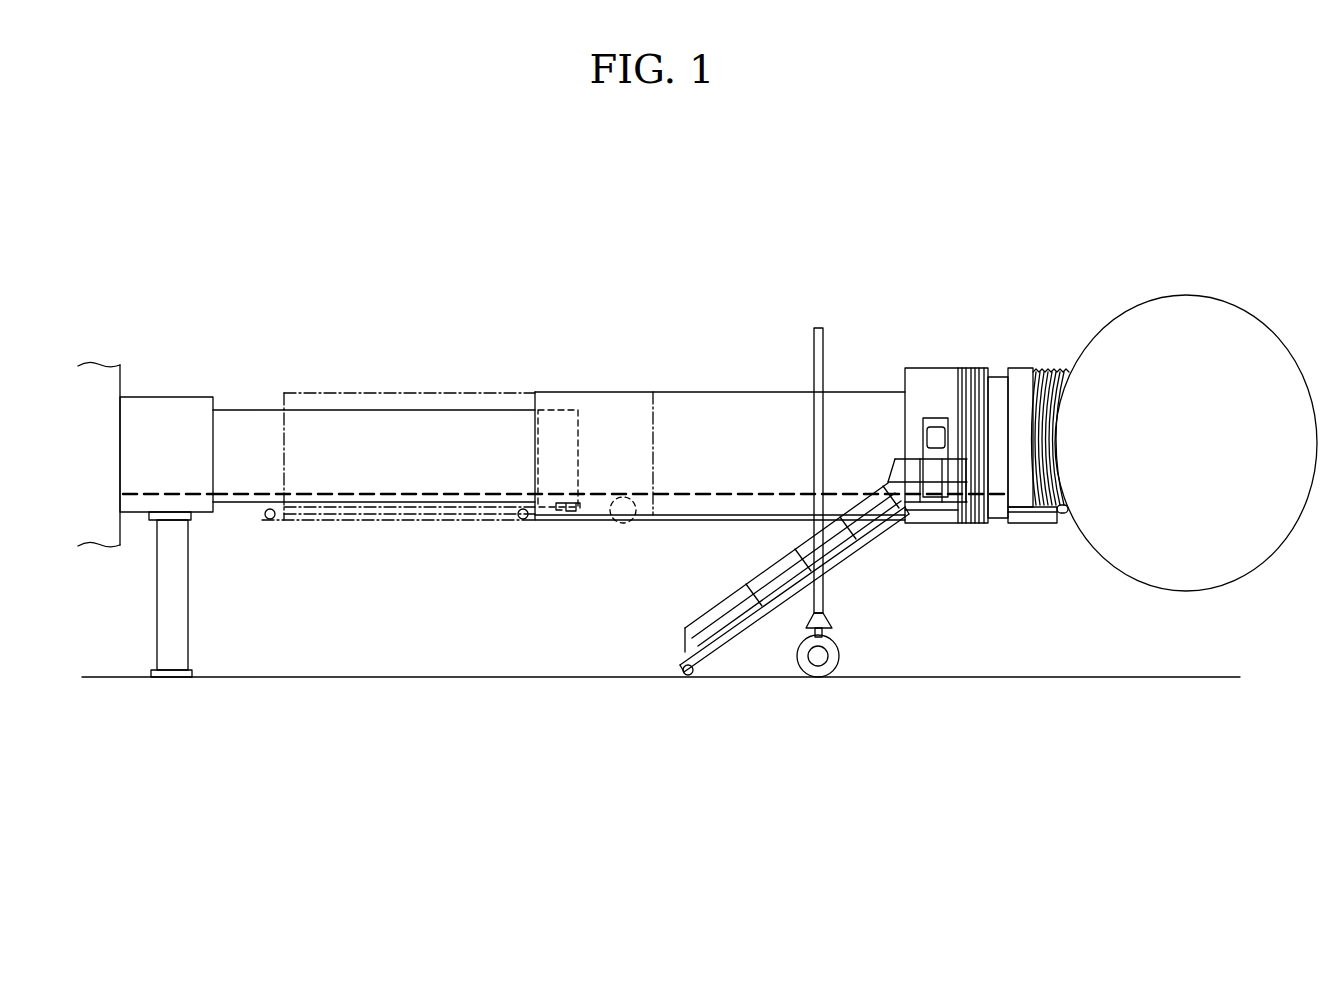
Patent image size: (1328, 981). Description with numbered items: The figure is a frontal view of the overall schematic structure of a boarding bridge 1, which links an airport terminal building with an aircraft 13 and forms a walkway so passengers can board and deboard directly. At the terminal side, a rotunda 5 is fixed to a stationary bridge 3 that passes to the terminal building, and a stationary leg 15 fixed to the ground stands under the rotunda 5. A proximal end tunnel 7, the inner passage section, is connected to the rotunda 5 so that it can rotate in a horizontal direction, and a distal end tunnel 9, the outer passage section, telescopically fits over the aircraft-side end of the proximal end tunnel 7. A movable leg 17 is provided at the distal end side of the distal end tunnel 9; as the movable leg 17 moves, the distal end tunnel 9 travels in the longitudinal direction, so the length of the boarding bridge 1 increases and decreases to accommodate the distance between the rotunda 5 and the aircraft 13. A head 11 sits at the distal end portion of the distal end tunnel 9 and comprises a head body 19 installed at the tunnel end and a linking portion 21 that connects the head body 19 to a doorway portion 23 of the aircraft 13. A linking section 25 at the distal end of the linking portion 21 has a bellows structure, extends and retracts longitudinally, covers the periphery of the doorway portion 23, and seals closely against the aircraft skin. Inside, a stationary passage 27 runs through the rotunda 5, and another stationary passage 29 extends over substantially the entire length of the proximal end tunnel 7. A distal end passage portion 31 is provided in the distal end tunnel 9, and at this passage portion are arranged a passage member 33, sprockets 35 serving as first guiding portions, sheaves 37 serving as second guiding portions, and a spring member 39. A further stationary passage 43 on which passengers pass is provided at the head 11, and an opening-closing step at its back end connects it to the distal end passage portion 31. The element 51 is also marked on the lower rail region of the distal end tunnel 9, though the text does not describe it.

The boarding bridge 1 is at (765, 172).
The stationary bridge 3 is at (96, 372).
The rotunda 5 is at (172, 396).
The proximal end tunnel 7 is at (246, 408).
The distal end tunnel 9 is at (435, 392).
The head 11 is at (975, 325).
The aircraft 13 is at (1240, 305).
The stationary leg 15 is at (190, 605).
The movable leg 17 is at (826, 597).
The head body 19 is at (943, 367).
The linking portion 21 is at (1020, 367).
The doorway portion 23 is at (1060, 430).
The linking section 25 is at (1052, 370).
The stationary passage 27 is at (165, 490).
The stationary passage 29 is at (353, 493).
The distal end passage portion 31 is at (762, 470).
The passage member 33 is at (680, 520).
The sprockets 35 is at (616, 520).
The sheaves 37 is at (265, 517).
The spring member 39 is at (565, 531).
The stationary passage 43 is at (972, 500).
The lower rail 51 is at (730, 522).